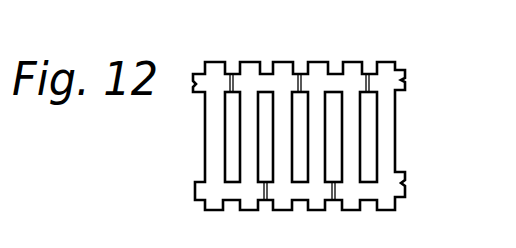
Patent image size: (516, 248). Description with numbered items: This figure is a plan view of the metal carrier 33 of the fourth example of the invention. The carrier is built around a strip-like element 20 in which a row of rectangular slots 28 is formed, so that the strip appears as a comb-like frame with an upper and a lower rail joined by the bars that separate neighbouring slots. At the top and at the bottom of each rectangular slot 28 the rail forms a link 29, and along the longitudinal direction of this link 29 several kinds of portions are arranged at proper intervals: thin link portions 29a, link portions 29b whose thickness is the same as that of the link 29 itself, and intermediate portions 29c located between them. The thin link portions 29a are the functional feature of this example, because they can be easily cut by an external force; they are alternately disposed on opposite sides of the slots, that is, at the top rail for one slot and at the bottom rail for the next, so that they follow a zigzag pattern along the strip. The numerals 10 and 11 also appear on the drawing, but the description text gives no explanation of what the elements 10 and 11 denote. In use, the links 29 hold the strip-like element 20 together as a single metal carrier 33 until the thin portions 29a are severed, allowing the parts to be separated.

The carrier strip 10 is at (386, 172).
The comb-like contact carrier 11 is at (337, 77).
The strip-like element 20 is at (333, 0).
The rectangular slot 28 is at (383, 137).
The link 29 is at (403, 80).
The thin link portion 29a is at (231, 76).
The link portion 29b is at (268, 77).
The intermediate portion 29c is at (247, 77).
The metal carrier 33 is at (177, 153).